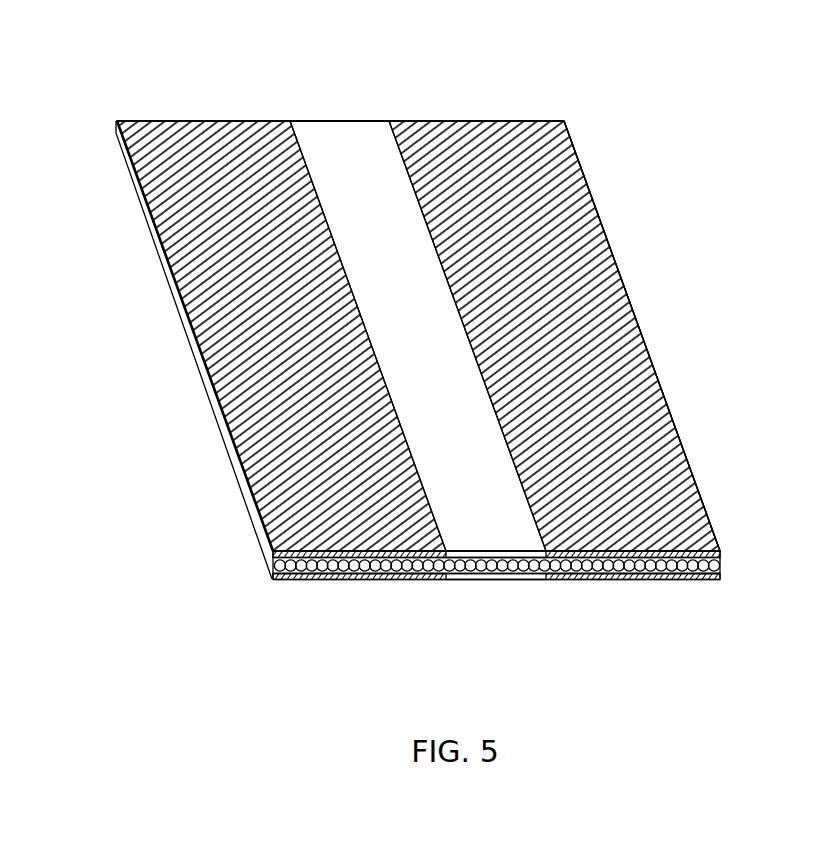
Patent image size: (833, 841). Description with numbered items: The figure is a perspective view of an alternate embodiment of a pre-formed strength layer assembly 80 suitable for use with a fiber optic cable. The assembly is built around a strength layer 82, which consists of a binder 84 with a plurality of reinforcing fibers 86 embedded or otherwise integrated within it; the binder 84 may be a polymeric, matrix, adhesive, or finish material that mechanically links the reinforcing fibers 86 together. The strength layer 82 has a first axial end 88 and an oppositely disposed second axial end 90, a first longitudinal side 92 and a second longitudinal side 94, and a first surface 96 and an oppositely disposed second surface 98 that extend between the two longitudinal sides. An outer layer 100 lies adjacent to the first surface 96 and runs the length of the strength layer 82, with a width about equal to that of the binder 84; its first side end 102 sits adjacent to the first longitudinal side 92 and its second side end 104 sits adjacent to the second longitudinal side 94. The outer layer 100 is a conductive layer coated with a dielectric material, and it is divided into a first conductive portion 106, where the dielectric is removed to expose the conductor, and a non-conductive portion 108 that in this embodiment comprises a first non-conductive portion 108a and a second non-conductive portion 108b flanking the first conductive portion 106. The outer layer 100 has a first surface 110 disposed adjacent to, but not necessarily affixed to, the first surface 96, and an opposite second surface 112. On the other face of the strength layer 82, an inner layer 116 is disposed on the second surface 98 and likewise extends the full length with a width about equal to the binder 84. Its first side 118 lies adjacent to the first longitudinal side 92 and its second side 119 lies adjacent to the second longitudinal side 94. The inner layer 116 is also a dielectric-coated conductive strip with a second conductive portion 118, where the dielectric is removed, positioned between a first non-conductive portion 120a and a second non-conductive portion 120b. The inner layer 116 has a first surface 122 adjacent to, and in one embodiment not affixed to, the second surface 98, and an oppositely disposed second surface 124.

The strength layer assembly 80 is at (228, 100).
The strength layer 82 is at (567, 100).
The binder 84 is at (712, 565).
The reinforcing fibers 86 is at (720, 575).
The first axial end 88 is at (476, 577).
The second axial end 90 is at (471, 125).
The first longitudinal side 92 is at (188, 345).
The second longitudinal side 94 is at (611, 250).
The first surface 96 is at (290, 556).
The second surface 98 is at (292, 578).
The outer layer 100 is at (414, 418).
The first side end 102 is at (163, 275).
The second side end 104 is at (623, 330).
The first conductive portion 106 is at (380, 288).
The non-conductive portion 108 is at (172, 155).
The first non-conductive portion 108a is at (249, 338).
The second non-conductive portion 108b is at (525, 338).
The first surface 110 is at (478, 566).
The second surface 112 is at (352, 157).
The inner layer 116 is at (430, 582).
The second conductive portion 118 is at (300, 582).
The second side 119 is at (708, 580).
The first non-conductive portion 120a is at (376, 582).
The second non-conductive portion 120b is at (668, 580).
The first surface 122 is at (597, 577).
The second surface 124 is at (555, 578).